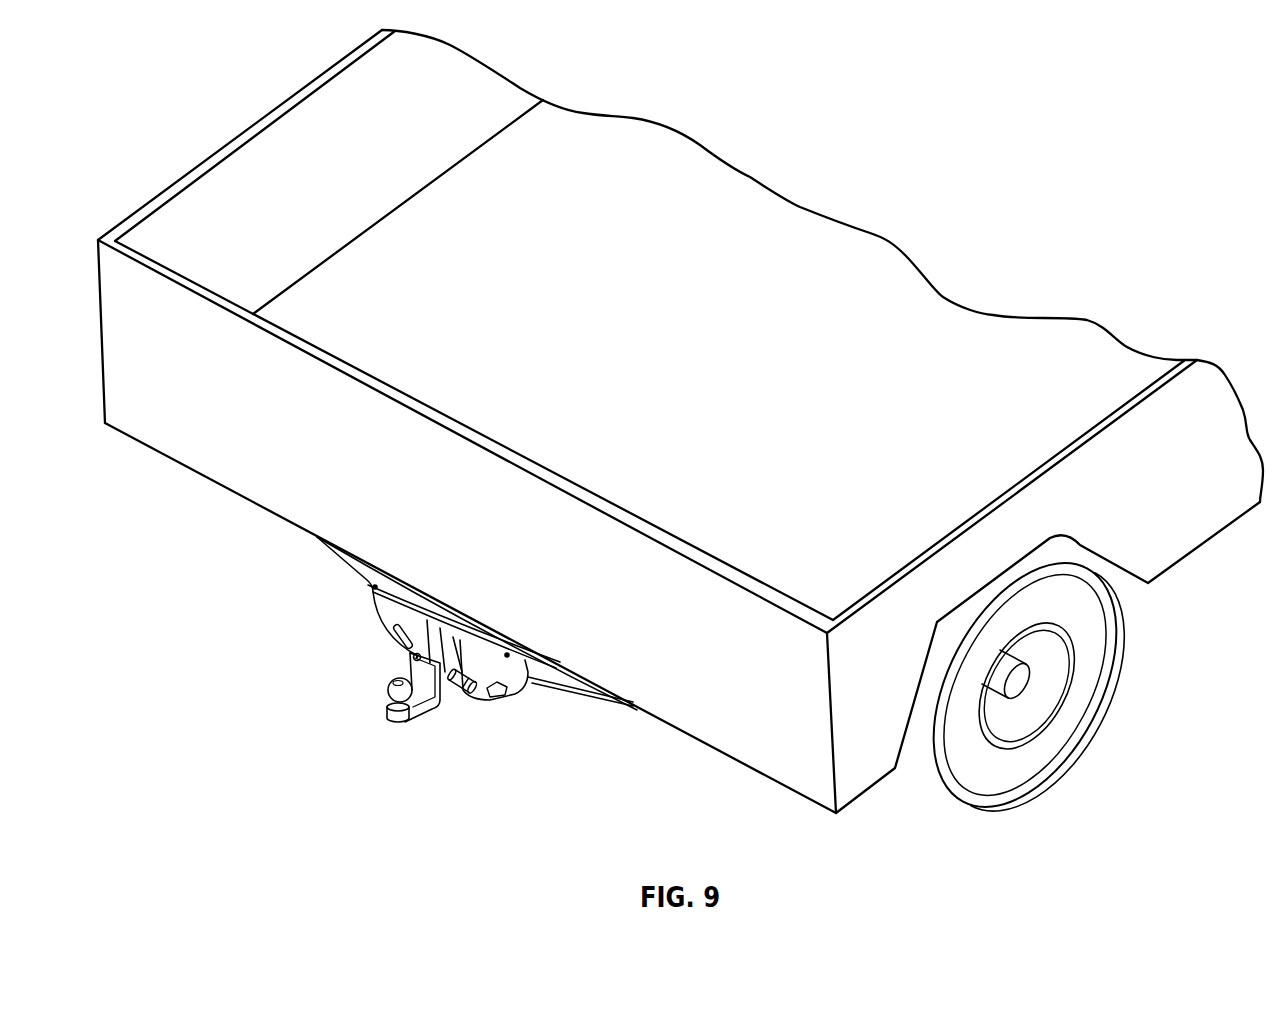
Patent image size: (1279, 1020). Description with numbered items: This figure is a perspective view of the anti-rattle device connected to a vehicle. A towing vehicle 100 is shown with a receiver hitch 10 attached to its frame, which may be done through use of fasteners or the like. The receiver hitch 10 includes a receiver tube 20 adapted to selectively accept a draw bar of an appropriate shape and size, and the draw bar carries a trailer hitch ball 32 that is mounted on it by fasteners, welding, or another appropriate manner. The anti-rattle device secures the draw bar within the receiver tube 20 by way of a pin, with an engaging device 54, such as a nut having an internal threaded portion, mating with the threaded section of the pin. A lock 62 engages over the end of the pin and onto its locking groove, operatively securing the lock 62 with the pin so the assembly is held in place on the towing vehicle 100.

The towing vehicle 100 is at (1185, 547).
The receiver hitch 10 is at (477, 661).
The receiver tube 20 is at (455, 690).
The trailer hitch ball 32 is at (388, 687).
The engaging device 54 is at (407, 656).
The lock 62 is at (457, 687).